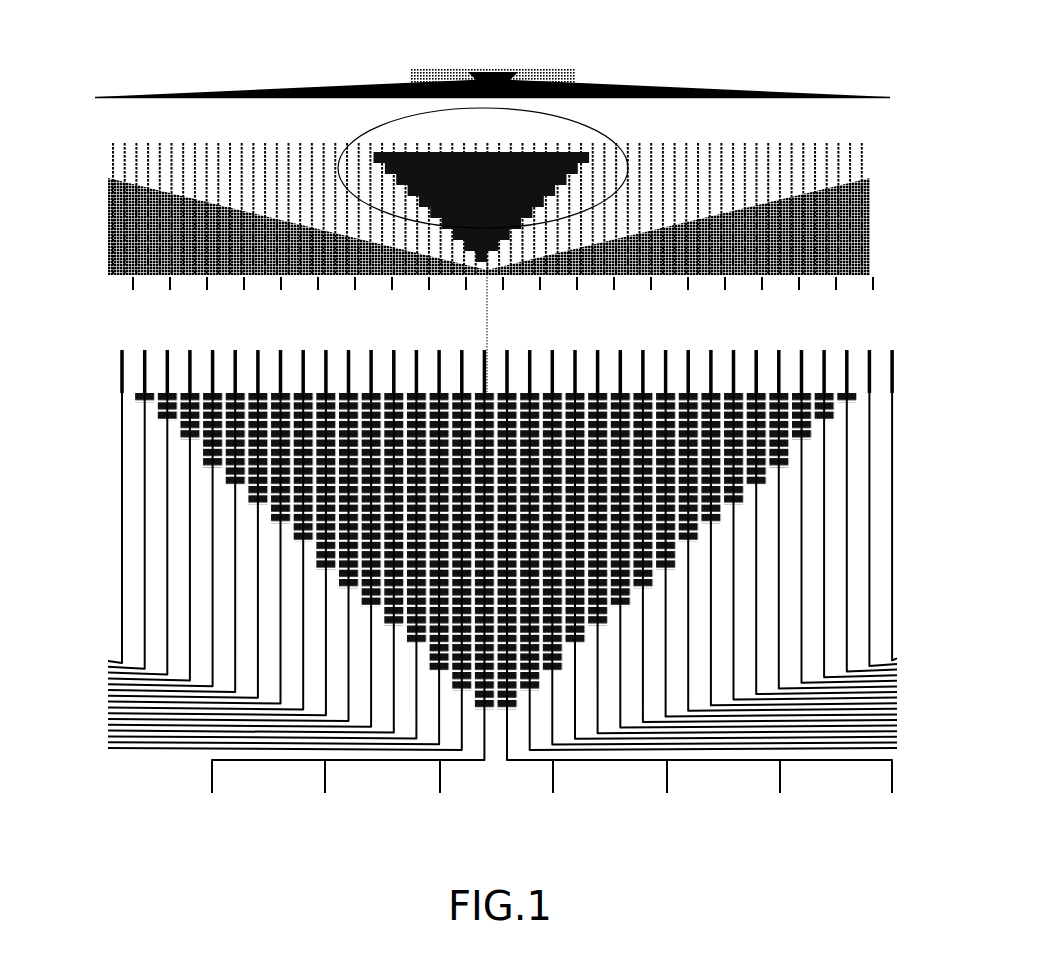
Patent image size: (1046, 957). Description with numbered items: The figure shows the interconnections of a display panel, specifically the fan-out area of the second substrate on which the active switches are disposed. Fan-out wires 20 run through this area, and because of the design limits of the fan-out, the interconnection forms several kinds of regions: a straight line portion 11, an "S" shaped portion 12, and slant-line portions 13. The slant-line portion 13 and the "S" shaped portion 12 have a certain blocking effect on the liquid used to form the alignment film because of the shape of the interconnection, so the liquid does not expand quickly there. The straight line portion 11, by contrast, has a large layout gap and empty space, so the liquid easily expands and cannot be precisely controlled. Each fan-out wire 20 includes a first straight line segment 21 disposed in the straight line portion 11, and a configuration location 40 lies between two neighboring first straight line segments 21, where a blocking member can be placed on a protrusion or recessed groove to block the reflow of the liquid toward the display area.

The straight line portion 11 is at (527, 81).
The "S" shaped portion 12 is at (587, 158).
The slant-line portion 13 is at (113, 224).
The fan-out wire 20 is at (253, 361).
The first straight line segment 21 is at (210, 573).
The configuration location 40 is at (770, 633).